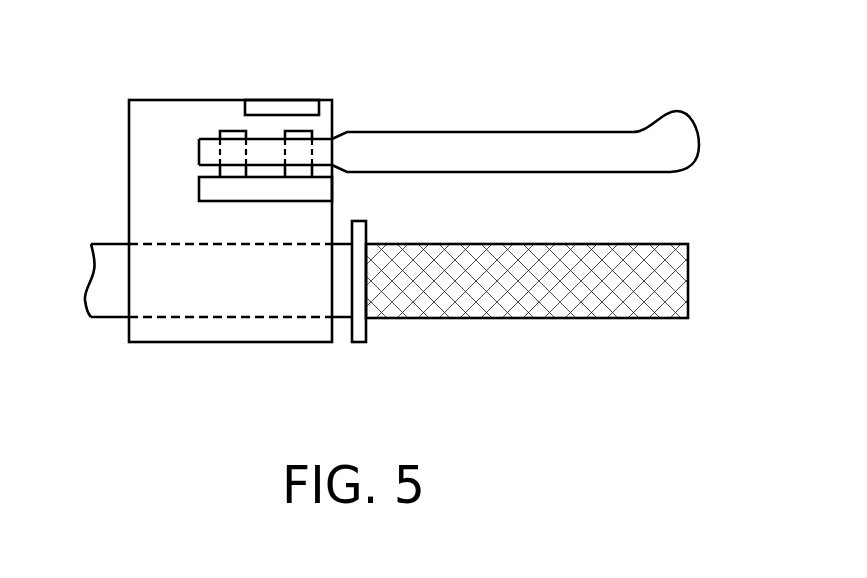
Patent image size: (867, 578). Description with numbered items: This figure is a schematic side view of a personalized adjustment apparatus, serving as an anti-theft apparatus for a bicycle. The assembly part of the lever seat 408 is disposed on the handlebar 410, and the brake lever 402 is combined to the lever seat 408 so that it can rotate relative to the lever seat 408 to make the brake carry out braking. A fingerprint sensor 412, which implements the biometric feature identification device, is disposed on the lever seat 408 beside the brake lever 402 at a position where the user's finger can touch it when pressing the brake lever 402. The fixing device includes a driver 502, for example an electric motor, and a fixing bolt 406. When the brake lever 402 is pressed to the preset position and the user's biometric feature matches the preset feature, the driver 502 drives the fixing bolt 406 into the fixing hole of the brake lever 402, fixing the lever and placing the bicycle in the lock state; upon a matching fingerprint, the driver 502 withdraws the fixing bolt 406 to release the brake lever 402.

The brake lever 402 is at (547, 132).
The fixing bolt 406 is at (233, 130).
The lever seat 408 is at (128, 106).
The handlebar 410 is at (603, 295).
The fingerprint sensor 412 is at (282, 107).
The driver 502 is at (210, 190).